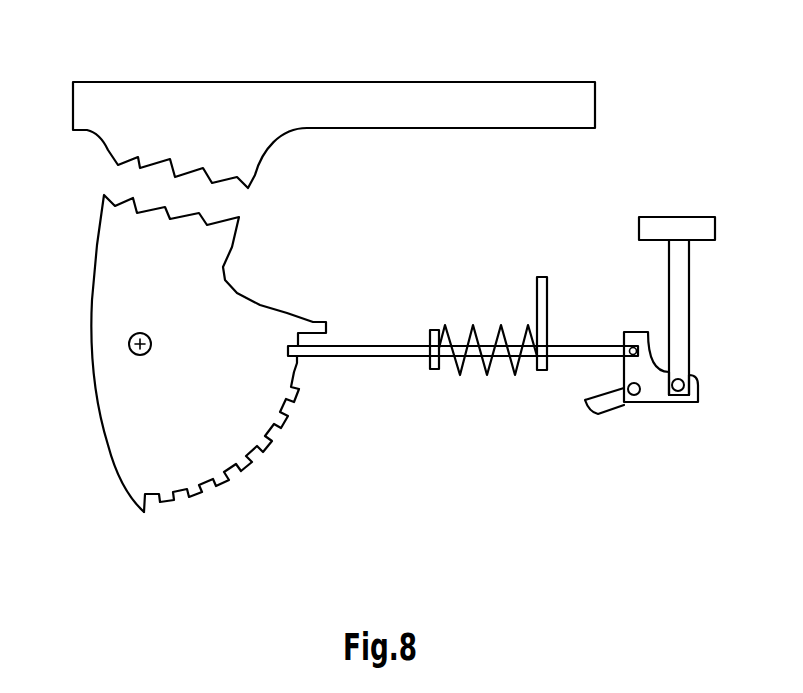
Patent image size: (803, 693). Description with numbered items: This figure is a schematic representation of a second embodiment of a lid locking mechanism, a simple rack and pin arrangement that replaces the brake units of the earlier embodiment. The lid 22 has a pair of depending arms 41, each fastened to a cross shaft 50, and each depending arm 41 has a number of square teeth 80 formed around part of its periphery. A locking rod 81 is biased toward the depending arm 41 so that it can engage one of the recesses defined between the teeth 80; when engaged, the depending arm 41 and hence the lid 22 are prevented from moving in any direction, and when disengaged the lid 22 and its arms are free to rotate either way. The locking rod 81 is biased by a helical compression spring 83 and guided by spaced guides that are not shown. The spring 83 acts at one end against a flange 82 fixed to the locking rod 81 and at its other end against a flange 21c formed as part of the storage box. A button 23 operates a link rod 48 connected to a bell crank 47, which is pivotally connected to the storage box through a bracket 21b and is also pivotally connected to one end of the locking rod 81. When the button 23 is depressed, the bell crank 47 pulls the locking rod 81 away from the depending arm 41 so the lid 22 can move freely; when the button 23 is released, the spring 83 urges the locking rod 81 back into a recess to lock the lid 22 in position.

The lid 22 is at (168, 82).
The depending arm 41 is at (108, 441).
The square teeth 80 is at (288, 405).
The cross shaft 50 is at (130, 350).
The locking rod 81 is at (358, 356).
The flange 82 is at (432, 369).
The helical compression spring 83 is at (488, 375).
The flange 21c is at (543, 277).
The button 23 is at (640, 228).
The link rod 48 is at (672, 305).
The bell crank 47 is at (670, 402).
The bracket 21b is at (608, 417).